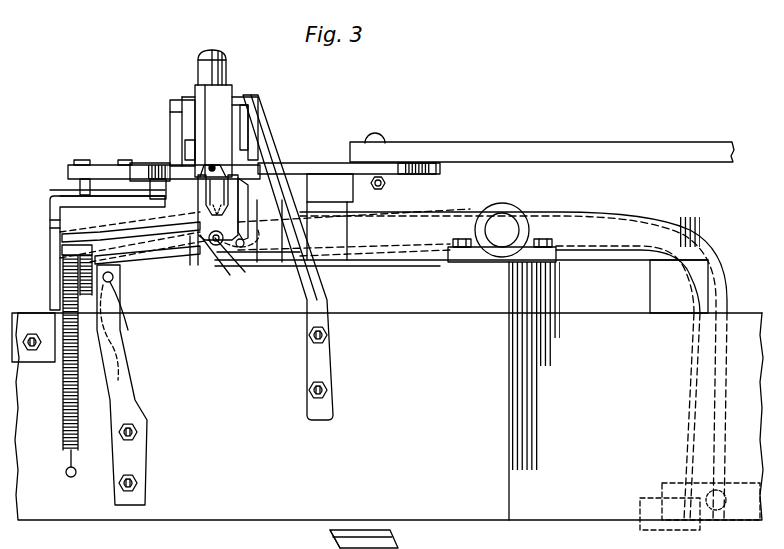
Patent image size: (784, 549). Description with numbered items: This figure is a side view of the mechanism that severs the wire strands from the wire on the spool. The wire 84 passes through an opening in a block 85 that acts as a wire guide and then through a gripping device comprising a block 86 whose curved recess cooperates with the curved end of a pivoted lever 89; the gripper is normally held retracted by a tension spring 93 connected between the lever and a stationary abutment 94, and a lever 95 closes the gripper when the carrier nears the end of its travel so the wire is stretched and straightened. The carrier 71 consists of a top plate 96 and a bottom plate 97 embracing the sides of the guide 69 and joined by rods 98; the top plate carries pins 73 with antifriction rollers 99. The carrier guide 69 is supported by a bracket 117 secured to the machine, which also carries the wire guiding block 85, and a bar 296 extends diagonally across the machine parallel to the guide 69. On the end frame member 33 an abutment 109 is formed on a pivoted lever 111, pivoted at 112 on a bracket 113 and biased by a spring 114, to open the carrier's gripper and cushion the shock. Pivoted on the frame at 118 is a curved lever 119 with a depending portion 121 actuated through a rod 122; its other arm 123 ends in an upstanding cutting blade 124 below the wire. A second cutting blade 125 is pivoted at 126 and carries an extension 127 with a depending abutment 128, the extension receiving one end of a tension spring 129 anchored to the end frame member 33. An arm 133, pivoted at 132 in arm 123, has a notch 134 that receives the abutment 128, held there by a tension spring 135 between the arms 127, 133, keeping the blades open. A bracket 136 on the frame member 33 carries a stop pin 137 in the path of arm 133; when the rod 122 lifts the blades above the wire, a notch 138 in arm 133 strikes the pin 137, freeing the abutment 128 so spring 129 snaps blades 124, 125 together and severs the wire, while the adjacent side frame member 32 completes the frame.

The frame side member 32 is at (540, 391).
The end frame member 33 is at (389, 400).
The guide 69 is at (243, 98).
The carrier 71 is at (168, 108).
The pins 73 is at (210, 50).
The wire 84 is at (212, 165).
The block 85 is at (215, 92).
The block 86 is at (187, 150).
The lever 89 is at (348, 162).
The tension spring 93 is at (320, 162).
The stationary abutment 94 is at (330, 192).
The lever 95 is at (561, 142).
The top plate 96 is at (182, 98).
The bottom plate 97 is at (165, 165).
The rods 98 is at (170, 114).
The antifriction rollers 99 is at (198, 65).
The abutment 109 is at (150, 183).
The pivoted lever 111 is at (105, 159).
The pivot 112 is at (192, 222).
The bracket 113 is at (50, 255).
The spring 114 is at (70, 192).
The bracket 117 is at (270, 145).
The pivot 118 is at (508, 218).
The curved lever 119 is at (626, 212).
The depending portion 121 is at (745, 295).
The rod 122 is at (768, 518).
The arm 123 is at (430, 218).
The cutting blade 124 is at (200, 205).
The second cutting blade 125 is at (255, 201).
The pivot 126 is at (240, 252).
The extension 127 is at (98, 240).
The depending abutment 128 is at (230, 280).
The tension spring 129 is at (66, 390).
The pivot 132 is at (258, 258).
The arm 133 is at (165, 262).
The notch 134 is at (200, 262).
The tension spring 135 is at (82, 282).
The bracket 136 is at (120, 389).
The stop pin 137 is at (128, 322).
The notch 138 is at (124, 346).
The bar 296 is at (365, 174).